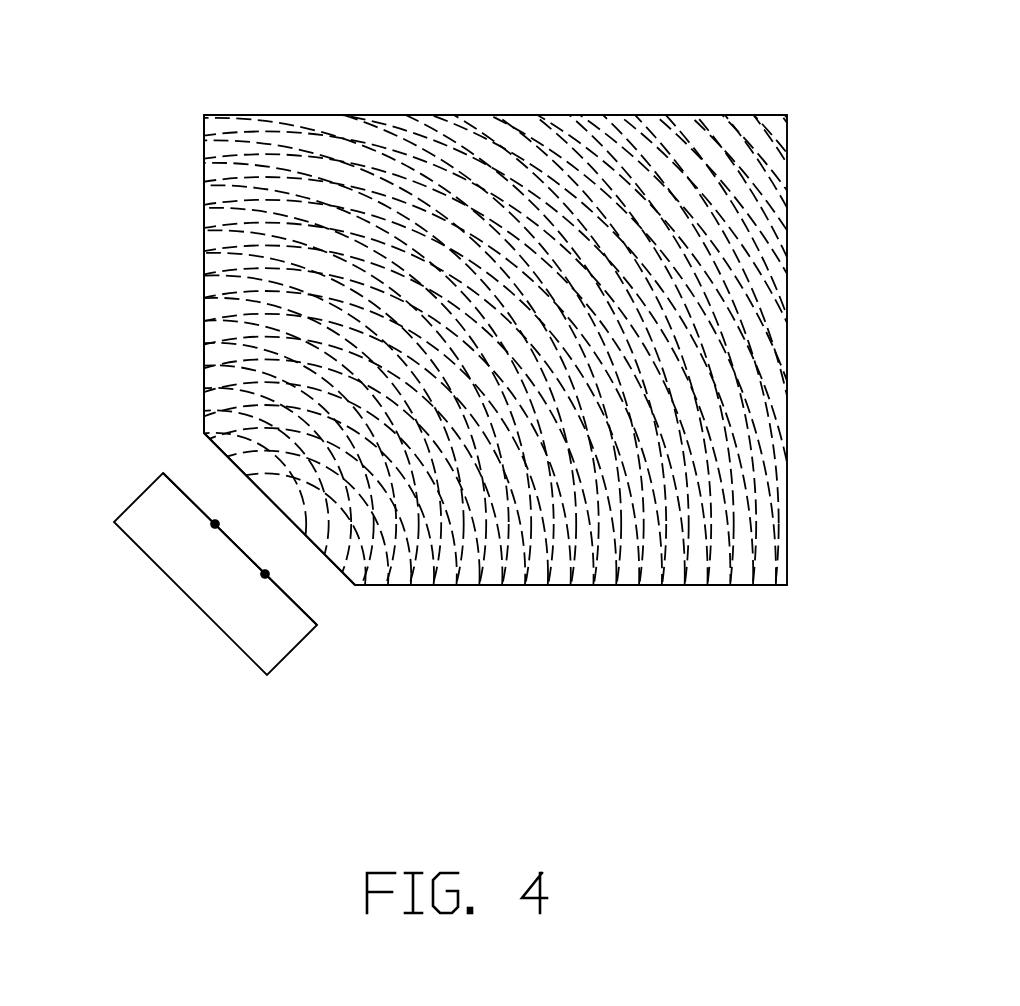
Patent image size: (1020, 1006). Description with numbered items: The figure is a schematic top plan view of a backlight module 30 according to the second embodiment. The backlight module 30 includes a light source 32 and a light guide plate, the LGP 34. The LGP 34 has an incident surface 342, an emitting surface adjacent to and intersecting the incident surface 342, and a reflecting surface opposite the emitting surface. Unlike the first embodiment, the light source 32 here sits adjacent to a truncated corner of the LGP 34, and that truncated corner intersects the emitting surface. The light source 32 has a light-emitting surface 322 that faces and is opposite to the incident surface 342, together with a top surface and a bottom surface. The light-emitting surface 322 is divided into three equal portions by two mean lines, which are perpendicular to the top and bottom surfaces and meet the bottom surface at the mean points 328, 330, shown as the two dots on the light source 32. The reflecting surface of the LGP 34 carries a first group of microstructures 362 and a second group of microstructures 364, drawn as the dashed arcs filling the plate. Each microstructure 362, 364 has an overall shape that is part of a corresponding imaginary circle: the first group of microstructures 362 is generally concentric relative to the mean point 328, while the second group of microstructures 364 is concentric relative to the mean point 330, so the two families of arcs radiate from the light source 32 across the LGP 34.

The backlight module 30 is at (512, 46).
The light source 32 is at (255, 637).
The light-emitting surface 322 is at (298, 603).
The mean point 328 is at (215, 524).
The mean point 330 is at (265, 574).
The LGP 34 is at (774, 186).
The incident surface 342 is at (213, 450).
The first group of microstructures 362 is at (216, 414).
The second group of microstructures 364 is at (568, 558).